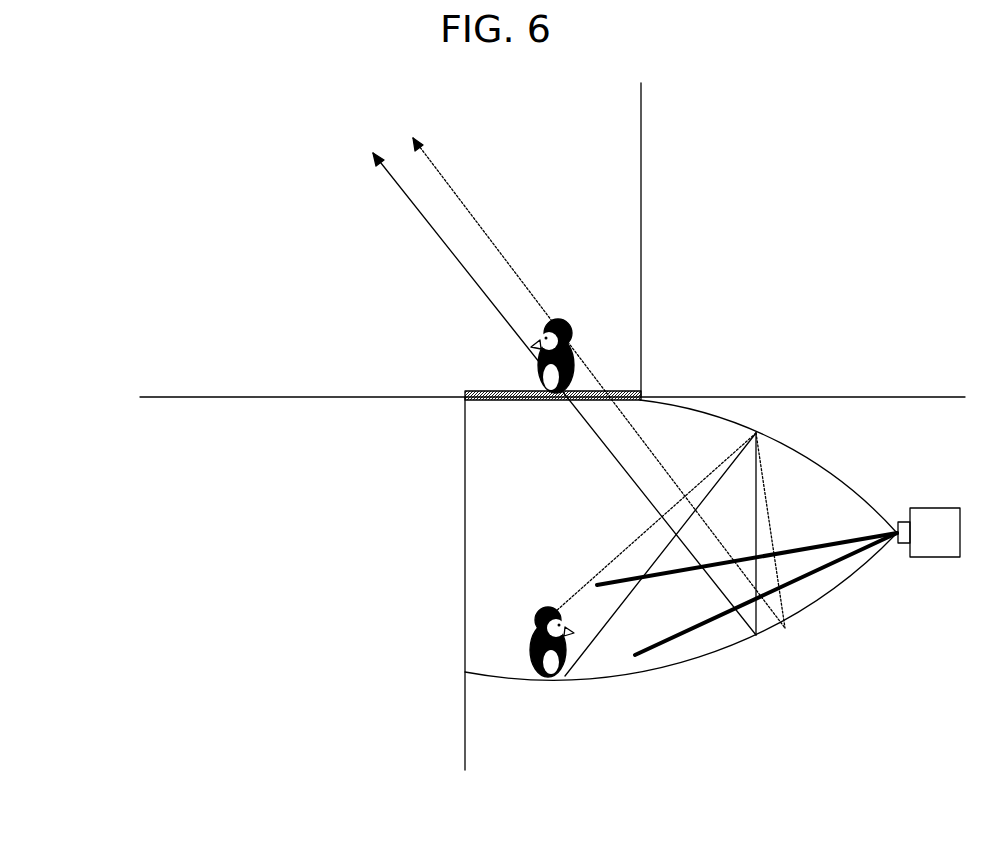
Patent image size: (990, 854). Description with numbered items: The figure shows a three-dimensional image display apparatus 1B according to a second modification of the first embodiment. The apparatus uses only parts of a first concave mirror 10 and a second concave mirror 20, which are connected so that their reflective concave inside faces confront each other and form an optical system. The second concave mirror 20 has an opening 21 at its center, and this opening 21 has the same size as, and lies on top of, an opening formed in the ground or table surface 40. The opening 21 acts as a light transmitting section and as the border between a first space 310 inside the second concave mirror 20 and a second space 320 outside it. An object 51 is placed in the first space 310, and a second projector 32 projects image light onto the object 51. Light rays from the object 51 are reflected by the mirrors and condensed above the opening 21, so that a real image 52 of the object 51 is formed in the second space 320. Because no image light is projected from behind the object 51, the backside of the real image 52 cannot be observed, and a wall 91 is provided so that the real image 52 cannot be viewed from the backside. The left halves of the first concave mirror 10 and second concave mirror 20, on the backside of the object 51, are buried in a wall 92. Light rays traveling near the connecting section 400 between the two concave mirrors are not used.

The three-dimensional image display apparatus 1B is at (128, 150).
The first concave mirror 10 is at (672, 663).
The second concave mirror 20 is at (840, 478).
The opening 21 is at (610, 390).
The second projector 32 is at (938, 558).
The ground or table surface 40 is at (920, 397).
The object 51 is at (545, 610).
The real image 52 is at (537, 365).
The wall 91 is at (641, 167).
The wall 92 is at (465, 715).
The first space 310 is at (545, 493).
The second space 320 is at (578, 183).
The connecting section 400 is at (897, 563).